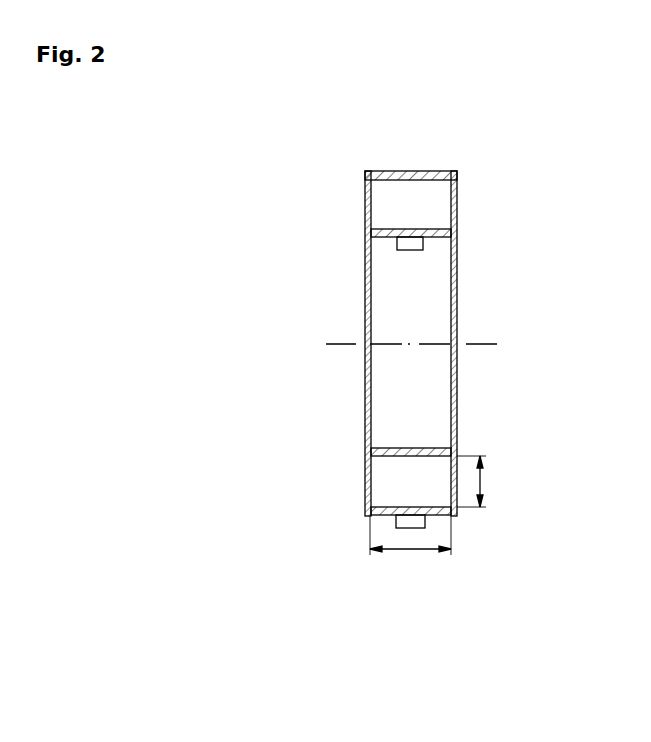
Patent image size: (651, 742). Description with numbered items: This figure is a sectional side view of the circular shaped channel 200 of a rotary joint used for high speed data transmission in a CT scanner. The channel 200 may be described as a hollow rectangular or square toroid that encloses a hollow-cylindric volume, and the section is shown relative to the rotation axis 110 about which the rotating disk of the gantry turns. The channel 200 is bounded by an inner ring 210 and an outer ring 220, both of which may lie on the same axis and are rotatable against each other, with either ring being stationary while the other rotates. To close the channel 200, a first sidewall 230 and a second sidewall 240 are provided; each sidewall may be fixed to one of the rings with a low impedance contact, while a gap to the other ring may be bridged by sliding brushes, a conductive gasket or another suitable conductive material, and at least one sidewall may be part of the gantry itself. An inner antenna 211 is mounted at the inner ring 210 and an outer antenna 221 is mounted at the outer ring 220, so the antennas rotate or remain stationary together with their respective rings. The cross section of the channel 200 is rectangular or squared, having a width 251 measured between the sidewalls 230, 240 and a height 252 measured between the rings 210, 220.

The circular shaped channel 200 is at (497, 162).
The outer ring 220 is at (411, 171).
The first sidewall 230 is at (365, 195).
The second sidewall 240 is at (457, 195).
The inner ring 210 is at (423, 231).
The inner antenna 211 is at (417, 245).
The rotation axis 110 is at (485, 343).
The height 252 is at (486, 481).
The outer antenna 221 is at (417, 522).
The width 251 is at (412, 552).